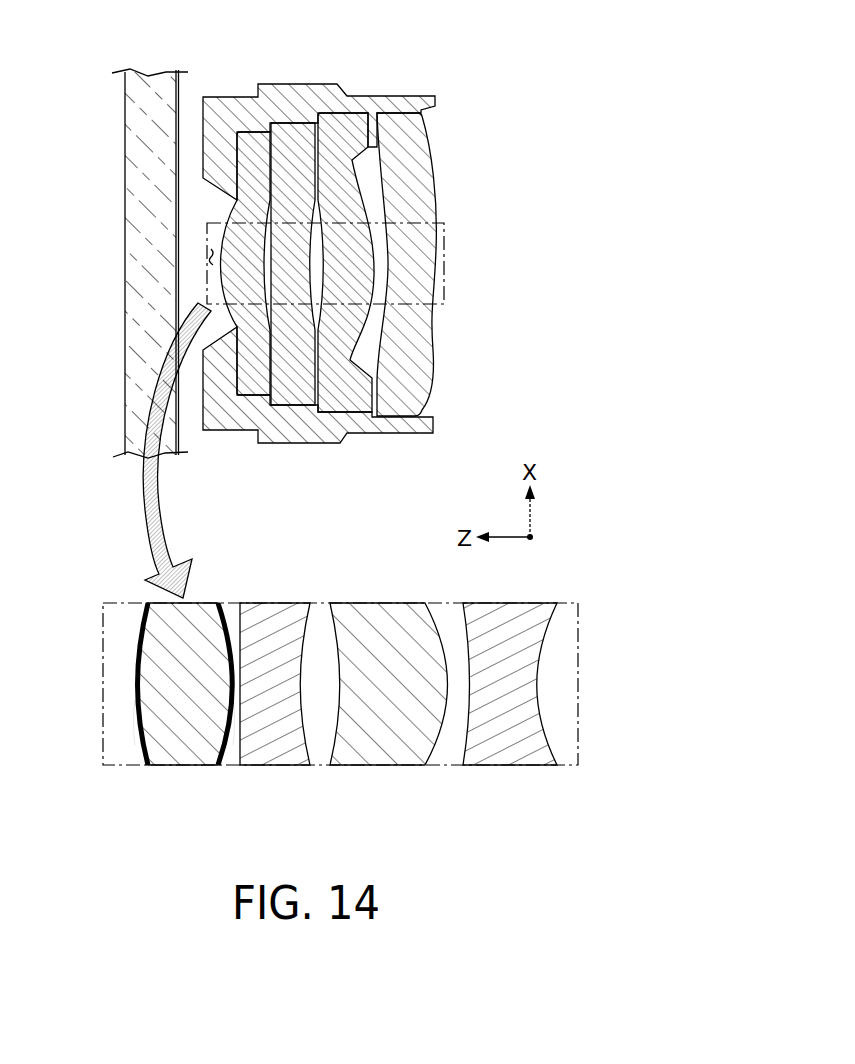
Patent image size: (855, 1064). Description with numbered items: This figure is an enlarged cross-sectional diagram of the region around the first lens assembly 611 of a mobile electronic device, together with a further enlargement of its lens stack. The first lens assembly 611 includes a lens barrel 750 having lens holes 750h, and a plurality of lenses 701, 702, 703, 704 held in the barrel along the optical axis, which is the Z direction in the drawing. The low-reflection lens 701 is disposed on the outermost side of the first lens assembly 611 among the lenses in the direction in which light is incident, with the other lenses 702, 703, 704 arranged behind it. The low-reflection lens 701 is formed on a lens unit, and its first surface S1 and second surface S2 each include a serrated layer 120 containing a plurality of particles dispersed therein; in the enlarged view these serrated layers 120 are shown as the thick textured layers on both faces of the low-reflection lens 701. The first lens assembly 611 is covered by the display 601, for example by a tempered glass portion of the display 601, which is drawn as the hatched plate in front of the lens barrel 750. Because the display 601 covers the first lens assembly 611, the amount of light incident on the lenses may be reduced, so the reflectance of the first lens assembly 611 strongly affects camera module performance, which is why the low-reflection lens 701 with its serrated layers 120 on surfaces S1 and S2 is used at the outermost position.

The lens barrel 750 is at (233, 97).
The first lens assembly 611 is at (313, 223).
The lens hole 750h is at (207, 257).
The display 601 is at (128, 272).
The low-reflection lens 701 is at (257, 392).
The lens 702 is at (293, 395).
The lens 703 is at (345, 405).
The lens 704 is at (402, 410).
The serrated layer 120 is at (145, 766).
The first surface S1 is at (244, 722).
The second surface S2 is at (124, 722).